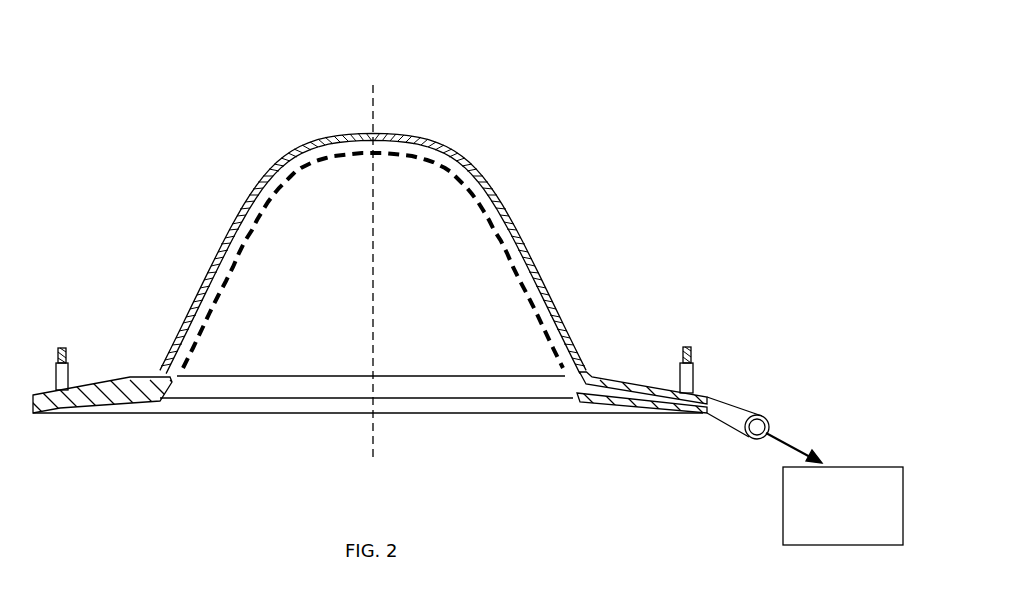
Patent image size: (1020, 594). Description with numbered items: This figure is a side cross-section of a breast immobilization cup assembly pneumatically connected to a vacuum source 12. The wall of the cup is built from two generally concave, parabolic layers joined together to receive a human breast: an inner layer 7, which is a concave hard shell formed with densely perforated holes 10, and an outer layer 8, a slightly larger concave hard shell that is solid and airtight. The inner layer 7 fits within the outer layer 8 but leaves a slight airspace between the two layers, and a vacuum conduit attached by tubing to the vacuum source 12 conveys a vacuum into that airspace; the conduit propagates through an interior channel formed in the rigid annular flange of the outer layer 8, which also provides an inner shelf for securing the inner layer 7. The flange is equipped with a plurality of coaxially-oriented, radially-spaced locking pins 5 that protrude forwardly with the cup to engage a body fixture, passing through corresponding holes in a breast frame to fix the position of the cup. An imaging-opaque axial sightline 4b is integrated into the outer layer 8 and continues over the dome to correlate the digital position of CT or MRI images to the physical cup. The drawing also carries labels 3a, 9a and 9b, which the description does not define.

The vacuum tube 3a is at (755, 410).
The axial sightline 4b is at (590, 368).
The locking pins 5 is at (68, 355).
The inner layer 7 is at (452, 188).
The outer layer 8 is at (512, 230).
The outer dome layer 9a is at (428, 163).
The base layer 9b is at (628, 386).
The perforated holes 10 is at (542, 332).
The vacuum source 12 is at (870, 477).